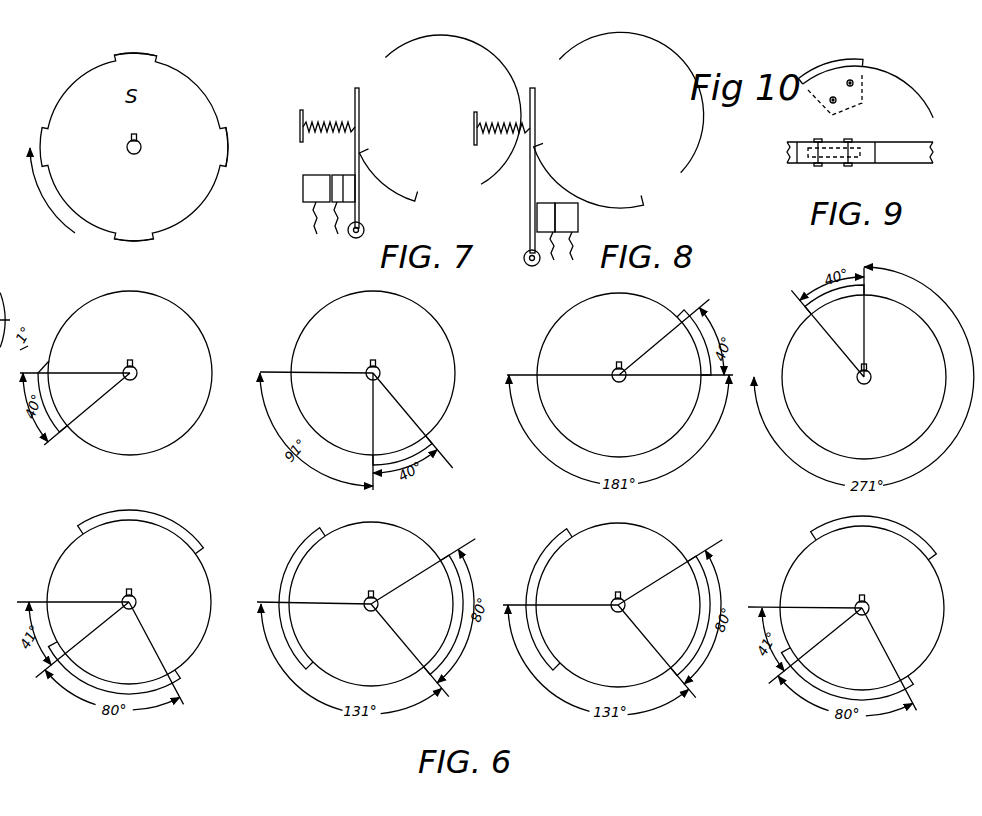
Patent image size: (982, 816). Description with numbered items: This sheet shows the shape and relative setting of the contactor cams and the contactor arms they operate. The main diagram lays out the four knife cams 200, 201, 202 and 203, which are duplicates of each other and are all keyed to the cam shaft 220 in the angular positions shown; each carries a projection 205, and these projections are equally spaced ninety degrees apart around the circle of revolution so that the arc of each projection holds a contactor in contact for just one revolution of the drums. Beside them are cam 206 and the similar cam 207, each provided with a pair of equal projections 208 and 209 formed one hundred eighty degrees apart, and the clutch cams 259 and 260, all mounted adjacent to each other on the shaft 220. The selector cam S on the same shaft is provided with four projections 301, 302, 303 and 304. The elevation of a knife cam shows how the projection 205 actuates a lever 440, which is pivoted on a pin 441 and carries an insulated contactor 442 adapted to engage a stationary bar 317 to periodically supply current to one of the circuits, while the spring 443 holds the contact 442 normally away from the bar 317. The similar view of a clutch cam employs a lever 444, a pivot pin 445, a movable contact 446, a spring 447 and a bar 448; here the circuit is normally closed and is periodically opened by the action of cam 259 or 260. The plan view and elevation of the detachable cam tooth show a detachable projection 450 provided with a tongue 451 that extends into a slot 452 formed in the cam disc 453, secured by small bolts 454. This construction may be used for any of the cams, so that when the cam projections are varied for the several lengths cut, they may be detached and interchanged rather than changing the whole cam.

In FIG. 6, the knife cam 200 is at (130, 373).
In FIG. 7, the knife cam 200 is at (453, 109).
In FIG. 6, the knife cam 201 is at (373, 373).
In FIG. 6, the knife cam 202 is at (619, 375).
In FIG. 6, the knife cam 203 is at (864, 377).
In FIG. 6, the cam projection 205 is at (67, 432).
In FIG. 7, the cam projection 205 is at (383, 168).
In FIG. 6, the cam 206 is at (129, 602).
In FIG. 6, the cam 207 is at (371, 604).
In FIG. 6, the cam projection 208 is at (182, 533).
In FIG. 6, the cam projection 209 is at (287, 582).
In FIG. 6, the cam shaft 220 is at (134, 154).
In FIG. 6, the clutch cam 259 is at (618, 605).
In FIG. 8, the clutch cam 259 is at (619, 120).
In FIG. 6, the clutch cam 260 is at (862, 608).
In FIG. 6, the selector projection 301 is at (47, 135).
In FIG. 6, the selector projection 302 is at (125, 233).
In FIG. 6, the selector projection 303 is at (222, 152).
In FIG. 6, the selector projection 304 is at (140, 62).
In FIG. 7, the stationary bar 317 is at (313, 193).
In FIG. 7, the lever 440 is at (355, 95).
In FIG. 7, the pivot pin 441 is at (364, 226).
In FIG. 7, the insulated contactor 442 is at (339, 178).
In FIG. 7, the spring 443 is at (300, 127).
In FIG. 8, the lever 444 is at (532, 153).
In FIG. 8, the pivot pin 445 is at (538, 253).
In FIG. 8, the movable contact 446 is at (548, 208).
In FIG. 8, the spring 447 is at (528, 123).
In FIG. 8, the bar 448 is at (565, 218).
In FIG. 10, the detachable projection 450 is at (805, 86).
In FIG. 10, the tongue 451 is at (842, 98).
In FIG. 10, the slot 452 is at (862, 90).
In FIG. 10, the cam disc 453 is at (817, 88).
In FIG. 9, the bolts 454 is at (847, 140).